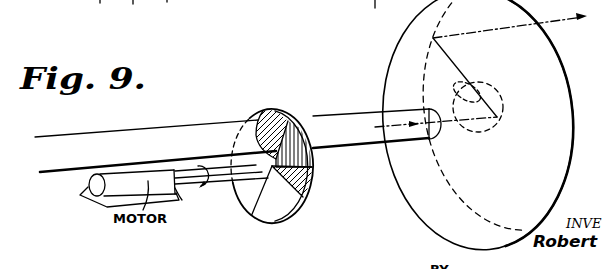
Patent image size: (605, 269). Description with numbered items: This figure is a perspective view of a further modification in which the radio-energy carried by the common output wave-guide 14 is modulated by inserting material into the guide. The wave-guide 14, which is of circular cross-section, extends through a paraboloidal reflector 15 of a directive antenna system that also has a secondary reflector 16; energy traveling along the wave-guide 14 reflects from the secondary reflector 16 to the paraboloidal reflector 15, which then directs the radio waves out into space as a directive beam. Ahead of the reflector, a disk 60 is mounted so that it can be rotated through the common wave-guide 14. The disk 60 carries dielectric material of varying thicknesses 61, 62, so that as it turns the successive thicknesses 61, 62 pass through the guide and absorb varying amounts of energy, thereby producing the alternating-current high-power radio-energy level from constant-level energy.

The common output wave-guide 14 is at (160, 133).
The paraboloidal reflector 15 is at (543, 201).
The secondary reflector 16 is at (503, 100).
The disk 60 is at (282, 224).
The dielectric thickness 61 is at (277, 115).
The dielectric thickness 62 is at (303, 132).